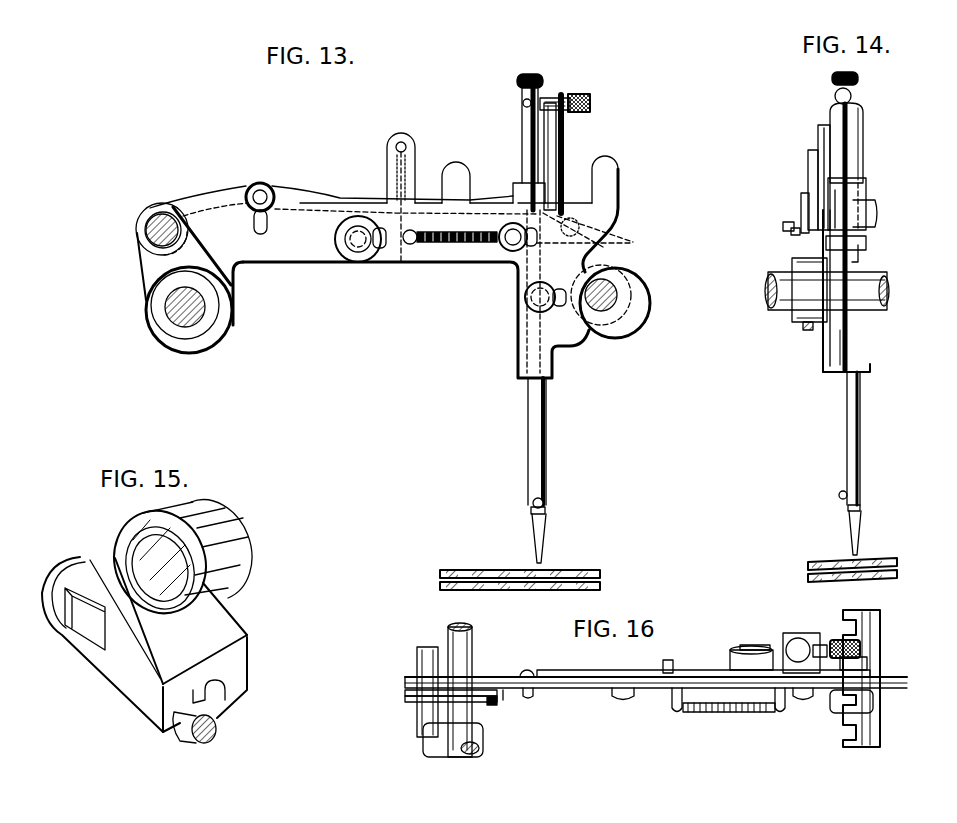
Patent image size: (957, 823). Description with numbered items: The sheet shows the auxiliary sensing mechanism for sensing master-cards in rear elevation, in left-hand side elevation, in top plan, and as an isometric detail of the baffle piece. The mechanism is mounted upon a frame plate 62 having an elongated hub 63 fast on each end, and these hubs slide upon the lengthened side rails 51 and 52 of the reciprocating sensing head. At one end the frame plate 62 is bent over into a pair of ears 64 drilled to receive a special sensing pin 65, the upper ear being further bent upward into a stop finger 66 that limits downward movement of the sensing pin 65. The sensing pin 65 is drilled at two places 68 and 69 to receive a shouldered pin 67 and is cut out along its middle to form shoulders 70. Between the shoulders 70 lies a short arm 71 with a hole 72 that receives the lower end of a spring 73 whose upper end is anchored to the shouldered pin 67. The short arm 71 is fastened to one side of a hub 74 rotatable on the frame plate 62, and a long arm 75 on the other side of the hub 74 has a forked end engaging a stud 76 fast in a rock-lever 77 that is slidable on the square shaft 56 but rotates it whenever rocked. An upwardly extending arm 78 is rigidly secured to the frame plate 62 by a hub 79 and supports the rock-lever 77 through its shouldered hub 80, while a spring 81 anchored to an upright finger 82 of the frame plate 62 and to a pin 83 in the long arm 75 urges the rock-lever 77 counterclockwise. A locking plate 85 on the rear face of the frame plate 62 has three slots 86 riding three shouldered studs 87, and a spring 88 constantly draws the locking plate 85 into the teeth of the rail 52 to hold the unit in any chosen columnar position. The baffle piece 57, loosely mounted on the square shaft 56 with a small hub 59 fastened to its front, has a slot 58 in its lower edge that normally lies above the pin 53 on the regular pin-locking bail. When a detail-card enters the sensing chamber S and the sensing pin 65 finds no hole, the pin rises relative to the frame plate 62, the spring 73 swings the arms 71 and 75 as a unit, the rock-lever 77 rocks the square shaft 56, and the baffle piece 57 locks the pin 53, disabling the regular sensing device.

In FIG. 13, the side rail 51 is at (170, 305).
In FIG. 16, the side rail 51 is at (472, 644).
In FIG. 13, the side rail 52 is at (614, 298).
In FIG. 14, the side rail 52 is at (880, 289).
In FIG. 16, the side rail 52 is at (885, 657).
In FIG. 15, the pin 53 is at (218, 726).
In FIG. 13, the square shaft 56 is at (150, 238).
In FIG. 14, the square shaft 56 is at (870, 214).
In FIG. 16, the square shaft 56 is at (425, 650).
In FIG. 15, the baffle piece 57 is at (210, 615).
In FIG. 15, the slot 58 is at (225, 683).
In FIG. 15, the hub 59 is at (205, 526).
In FIG. 13, the frame plate 62 is at (310, 258).
In FIG. 14, the frame plate 62 is at (826, 361).
In FIG. 16, the frame plate 62 is at (498, 676).
In FIG. 13, the elongated hub 63 is at (208, 332).
In FIG. 14, the elongated hub 63 is at (798, 324).
In FIG. 16, the elongated hub 63 is at (423, 741).
In FIG. 13, the ear 64 is at (518, 185).
In FIG. 14, the ear 64 is at (864, 184).
In FIG. 16, the ear 64 is at (790, 633).
In FIG. 13, the sensing pin 65 is at (546, 443).
In FIG. 14, the sensing pin 65 is at (861, 442).
In FIG. 16, the sensing pin 65 is at (800, 639).
In FIG. 13, the stop finger 66 is at (556, 143).
In FIG. 14, the stop finger 66 is at (860, 146).
In FIG. 16, the stop finger 66 is at (823, 645).
In FIG. 13, the shouldered pin 67 is at (588, 97).
In FIG. 14, the shouldered pin 67 is at (850, 95).
In FIG. 16, the shouldered pin 67 is at (842, 640).
In FIG. 13, the drilled hole 68 is at (522, 103).
In FIG. 13, the drilled hole 69 is at (527, 205).
In FIG. 14, the drilled hole 69 is at (856, 201).
In FIG. 13, the shoulder 70 is at (560, 208).
In FIG. 14, the shoulder 70 is at (842, 347).
In FIG. 13, the short arm 71 is at (605, 243).
In FIG. 14, the short arm 71 is at (848, 241).
In FIG. 16, the short arm 71 is at (766, 652).
In FIG. 13, the hole 72 is at (577, 223).
In FIG. 13, the spring 73 is at (566, 192).
In FIG. 14, the spring 73 is at (851, 121).
In FIG. 16, the spring 73 is at (875, 665).
In FIG. 14, the hub 74 is at (860, 256).
In FIG. 16, the hub 74 is at (745, 657).
In FIG. 13, the long arm 75 is at (305, 195).
In FIG. 14, the long arm 75 is at (830, 233).
In FIG. 16, the long arm 75 is at (590, 670).
In FIG. 13, the stud 76 is at (262, 192).
In FIG. 16, the stud 76 is at (533, 668).
In FIG. 13, the rock-lever 77 is at (218, 210).
In FIG. 16, the rock-lever 77 is at (503, 693).
In FIG. 13, the arm 78 is at (158, 286).
In FIG. 14, the arm 78 is at (803, 197).
In FIG. 16, the arm 78 is at (408, 700).
In FIG. 16, the hub 79 is at (495, 708).
In FIG. 13, the hub 80 is at (140, 224).
In FIG. 16, the hub 80 is at (405, 686).
In FIG. 13, the spring 81 is at (393, 160).
In FIG. 13, the upright finger 82 is at (413, 160).
In FIG. 14, the upright finger 82 is at (820, 134).
In FIG. 16, the upright finger 82 is at (675, 670).
In FIG. 13, the pin 83 is at (400, 263).
In FIG. 14, the pin 83 is at (826, 125).
In FIG. 13, the locking plate 85 is at (533, 297).
In FIG. 14, the locking plate 85 is at (810, 169).
In FIG. 16, the locking plate 85 is at (675, 701).
In FIG. 13, the slot 86 is at (379, 248).
In FIG. 13, the shouldered stud 87 is at (356, 246).
In FIG. 14, the shouldered stud 87 is at (785, 229).
In FIG. 16, the shouldered stud 87 is at (625, 702).
In FIG. 13, the spring 88 is at (448, 245).
In FIG. 14, the spring 88 is at (795, 234).
In FIG. 16, the spring 88 is at (720, 714).
In FIG. 13, the sensing chamber S is at (565, 578).
In FIG. 14, the sensing chamber S is at (812, 563).